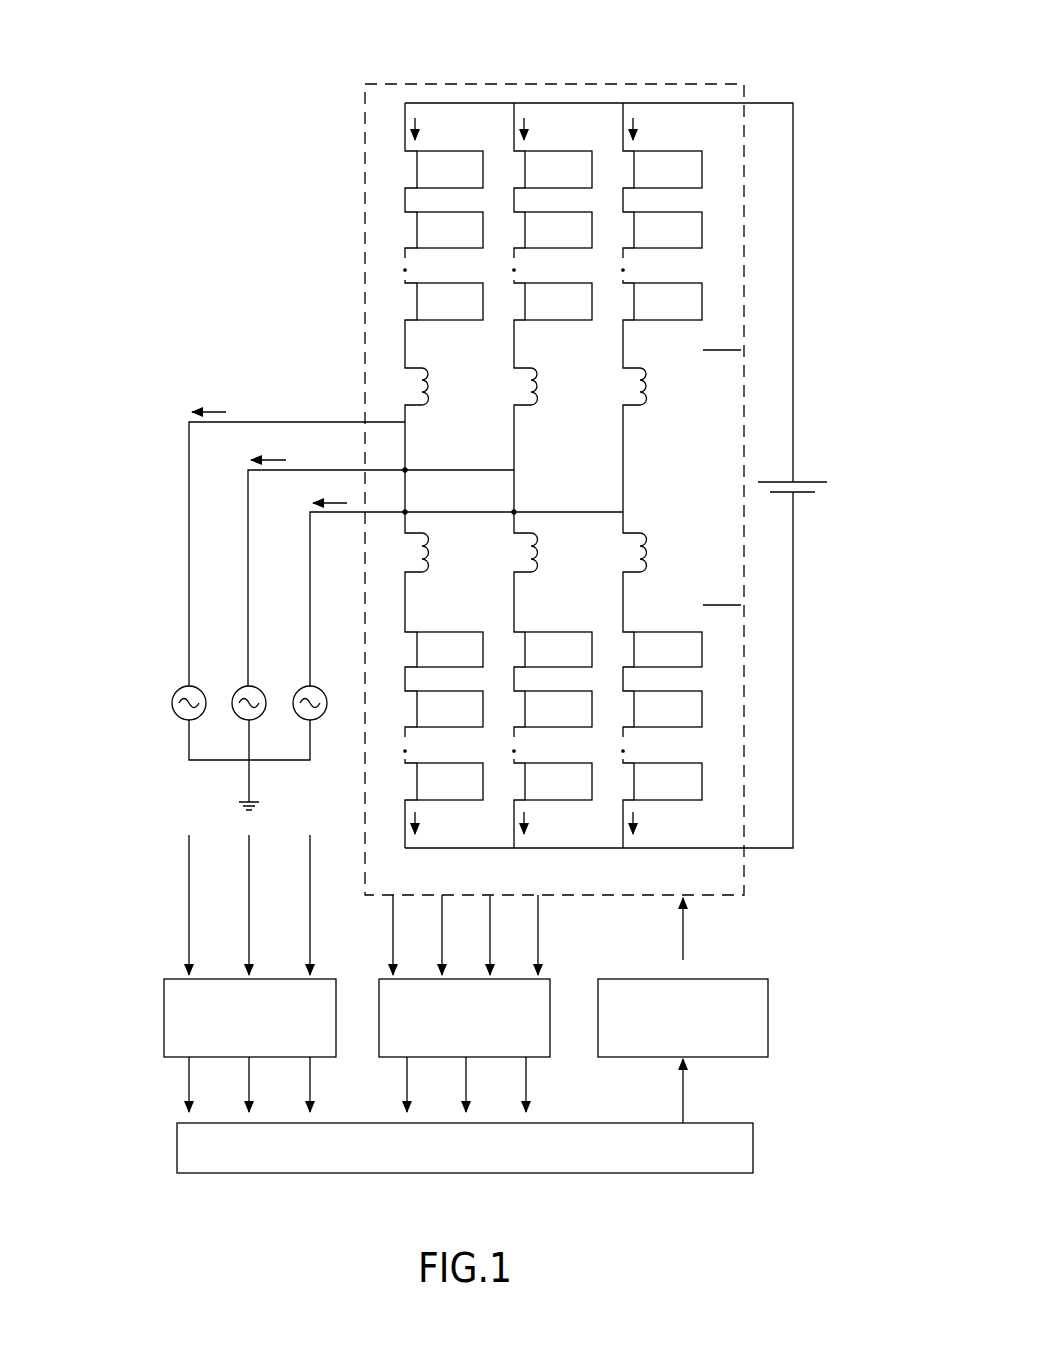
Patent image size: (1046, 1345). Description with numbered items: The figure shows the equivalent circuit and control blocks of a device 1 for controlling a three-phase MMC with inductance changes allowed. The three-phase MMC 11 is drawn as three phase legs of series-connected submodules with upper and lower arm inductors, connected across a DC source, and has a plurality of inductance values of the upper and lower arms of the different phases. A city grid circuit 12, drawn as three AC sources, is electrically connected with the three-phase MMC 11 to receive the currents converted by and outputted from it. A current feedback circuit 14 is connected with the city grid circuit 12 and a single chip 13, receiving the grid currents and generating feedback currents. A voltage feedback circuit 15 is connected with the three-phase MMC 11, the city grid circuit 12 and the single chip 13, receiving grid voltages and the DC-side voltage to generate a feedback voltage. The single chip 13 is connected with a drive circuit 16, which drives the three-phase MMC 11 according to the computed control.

The modular multilevel converter system 1 is at (180, 70).
The three-phase MMC 11 is at (557, 84).
The city grid circuit 12 is at (168, 668).
The single chip 13 is at (177, 1145).
The current feedback circuit 14 is at (164, 1018).
The voltage feedback circuit 15 is at (550, 1043).
The drive circuit 16 is at (768, 1018).